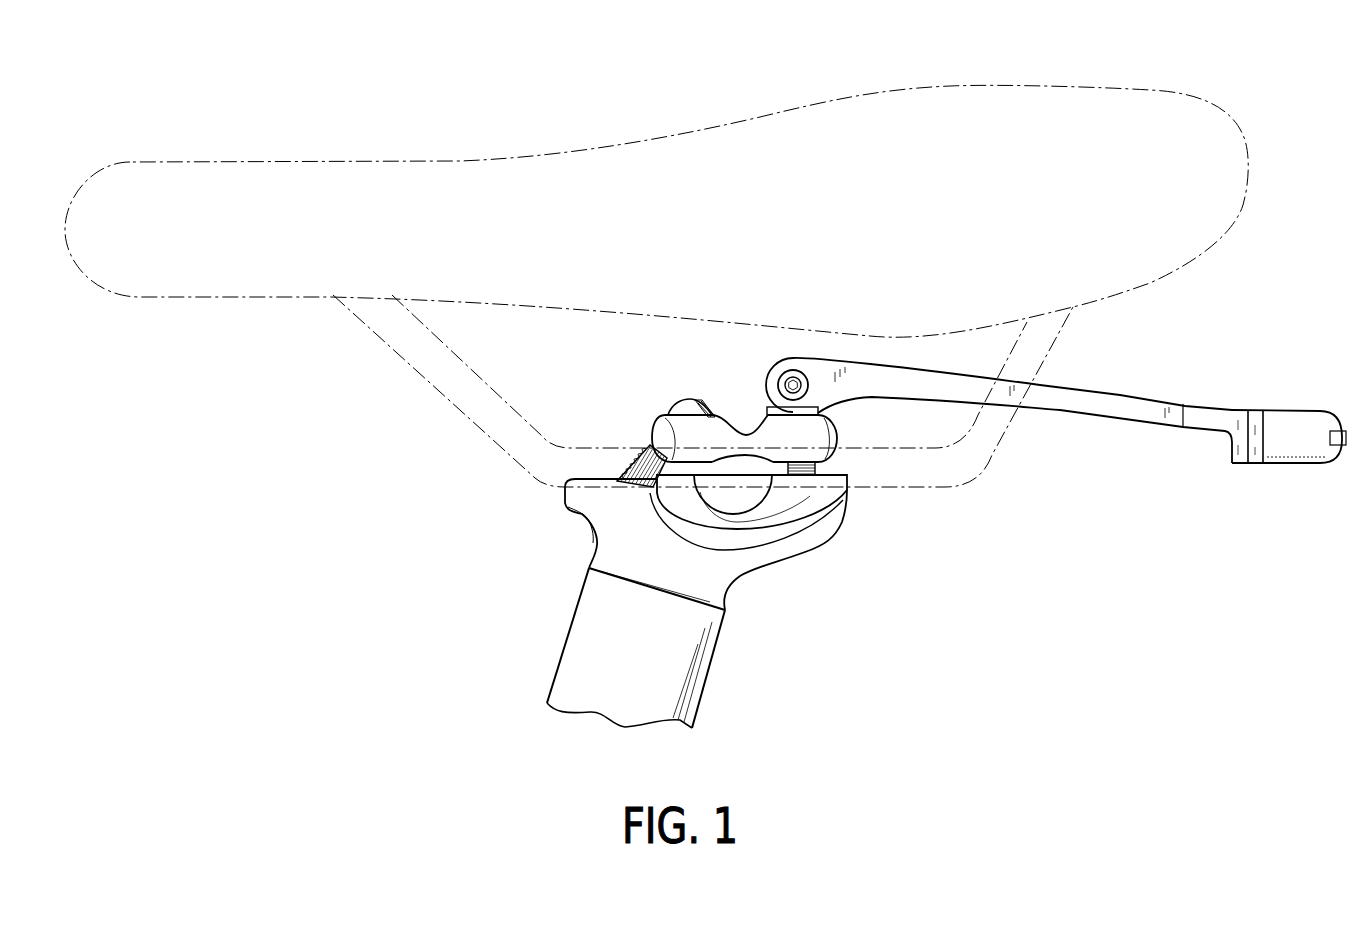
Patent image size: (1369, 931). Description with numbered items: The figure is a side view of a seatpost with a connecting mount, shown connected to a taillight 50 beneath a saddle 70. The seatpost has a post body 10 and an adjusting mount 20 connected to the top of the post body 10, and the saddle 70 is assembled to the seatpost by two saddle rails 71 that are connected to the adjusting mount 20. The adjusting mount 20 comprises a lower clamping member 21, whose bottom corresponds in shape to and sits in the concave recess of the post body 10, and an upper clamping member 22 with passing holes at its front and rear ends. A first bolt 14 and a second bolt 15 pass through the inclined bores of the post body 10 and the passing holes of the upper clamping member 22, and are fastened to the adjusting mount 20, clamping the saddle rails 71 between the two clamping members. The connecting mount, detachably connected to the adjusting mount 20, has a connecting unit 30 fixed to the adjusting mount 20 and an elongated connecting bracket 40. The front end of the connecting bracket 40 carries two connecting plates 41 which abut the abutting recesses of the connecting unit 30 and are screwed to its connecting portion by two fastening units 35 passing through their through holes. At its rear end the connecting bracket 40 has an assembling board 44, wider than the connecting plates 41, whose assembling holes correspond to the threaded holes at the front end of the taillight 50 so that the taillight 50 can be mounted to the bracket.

The post body 10 is at (747, 656).
The first bolt 14 is at (642, 470).
The second bolt 15 is at (818, 472).
The adjusting mount 20 is at (679, 380).
The lower clamping member 21 is at (805, 502).
The upper clamping member 22 is at (843, 428).
The connecting unit 30 is at (761, 411).
The fastening unit 35 is at (800, 383).
The connecting bracket 40 is at (1106, 444).
The connecting plate 41 is at (781, 367).
The assembling board 44 is at (1234, 477).
The taillight 50 is at (1309, 398).
The saddle 70 is at (1076, 78).
The saddle rail 71 is at (972, 450).